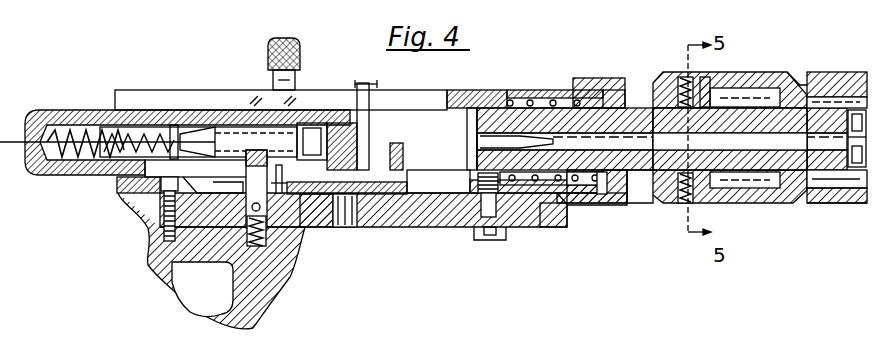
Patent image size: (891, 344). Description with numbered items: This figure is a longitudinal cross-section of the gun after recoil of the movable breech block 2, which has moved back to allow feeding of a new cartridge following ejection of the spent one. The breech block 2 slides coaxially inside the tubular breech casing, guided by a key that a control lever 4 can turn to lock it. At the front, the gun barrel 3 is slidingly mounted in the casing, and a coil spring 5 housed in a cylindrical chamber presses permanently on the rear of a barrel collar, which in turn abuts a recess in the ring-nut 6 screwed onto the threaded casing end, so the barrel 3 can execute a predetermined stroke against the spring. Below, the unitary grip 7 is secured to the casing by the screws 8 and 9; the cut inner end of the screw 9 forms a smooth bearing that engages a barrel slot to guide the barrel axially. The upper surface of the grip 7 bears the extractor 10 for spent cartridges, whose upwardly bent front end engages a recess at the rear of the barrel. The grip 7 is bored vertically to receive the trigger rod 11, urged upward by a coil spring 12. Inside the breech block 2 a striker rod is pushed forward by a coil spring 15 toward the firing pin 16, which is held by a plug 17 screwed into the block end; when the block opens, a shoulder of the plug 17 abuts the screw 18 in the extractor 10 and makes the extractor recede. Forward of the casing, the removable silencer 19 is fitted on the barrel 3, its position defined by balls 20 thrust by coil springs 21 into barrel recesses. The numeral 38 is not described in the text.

The movable breech block 2 is at (66, 176).
The gun barrel 3 is at (633, 108).
The control lever 4 is at (268, 60).
The coil spring 5 is at (540, 97).
The ring-nut 6 is at (606, 204).
The unitary grip 7 is at (270, 294).
The screw 8 is at (161, 208).
The screw 9 is at (504, 233).
The extractor 10 is at (368, 200).
The trigger 11 is at (281, 230).
The coil spring 12 is at (268, 244).
The coil spring 15 is at (63, 128).
The firing pin 16 is at (348, 222).
The plug 17 is at (340, 135).
The screw 18 is at (279, 195).
The removable silencer 19 is at (728, 204).
The balls 20 is at (724, 96).
The coil springs 21 is at (681, 78).
The end cap ring 38 is at (858, 146).